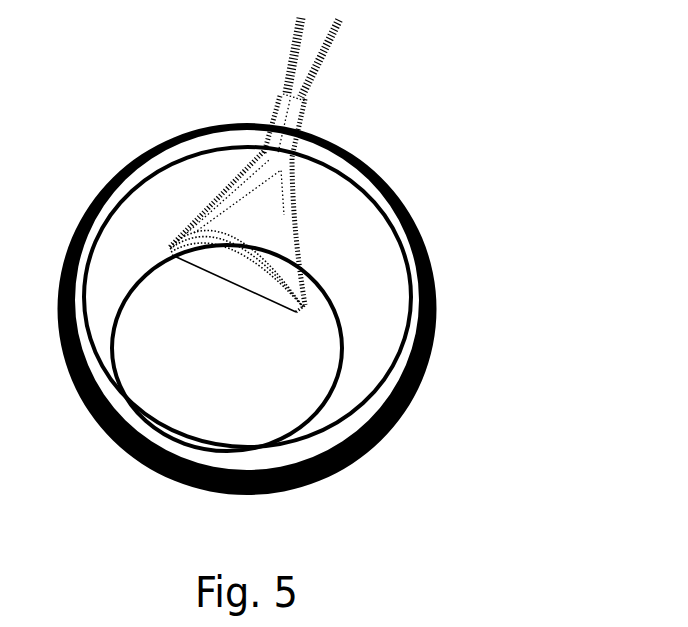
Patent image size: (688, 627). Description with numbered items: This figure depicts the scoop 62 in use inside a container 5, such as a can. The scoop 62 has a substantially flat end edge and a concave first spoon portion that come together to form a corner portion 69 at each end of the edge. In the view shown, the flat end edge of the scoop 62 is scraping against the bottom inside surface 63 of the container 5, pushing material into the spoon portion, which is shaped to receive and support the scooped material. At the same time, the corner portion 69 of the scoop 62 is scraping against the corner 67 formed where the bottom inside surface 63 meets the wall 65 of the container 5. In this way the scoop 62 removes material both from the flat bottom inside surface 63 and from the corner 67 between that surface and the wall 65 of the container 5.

The container 5 is at (241, 306).
The scoop 62 is at (242, 190).
The bottom inside surface 63 is at (205, 403).
The wall 65 is at (137, 230).
The corner 67 is at (205, 198).
The corner portion 69 is at (230, 277).